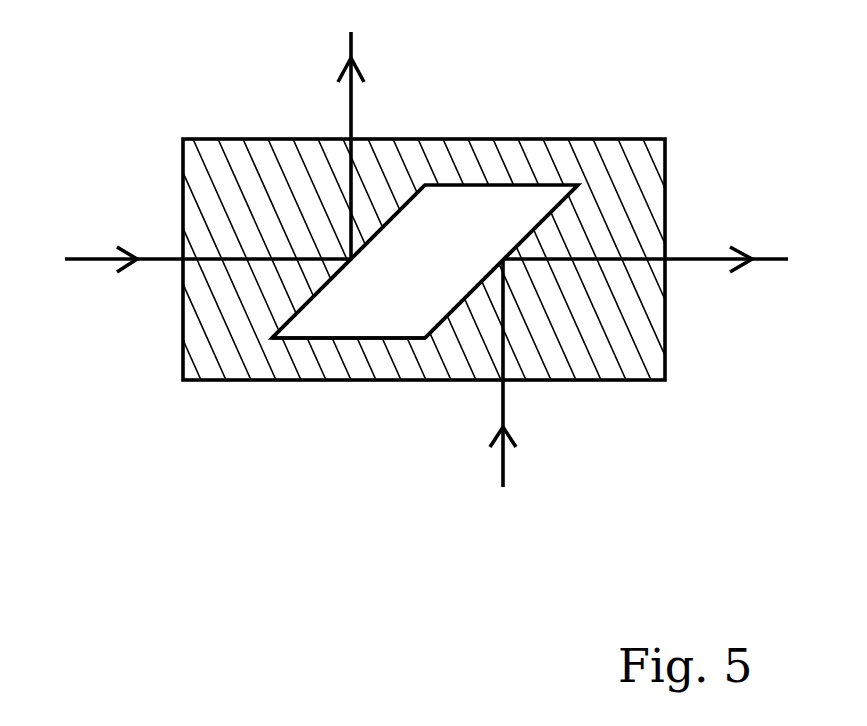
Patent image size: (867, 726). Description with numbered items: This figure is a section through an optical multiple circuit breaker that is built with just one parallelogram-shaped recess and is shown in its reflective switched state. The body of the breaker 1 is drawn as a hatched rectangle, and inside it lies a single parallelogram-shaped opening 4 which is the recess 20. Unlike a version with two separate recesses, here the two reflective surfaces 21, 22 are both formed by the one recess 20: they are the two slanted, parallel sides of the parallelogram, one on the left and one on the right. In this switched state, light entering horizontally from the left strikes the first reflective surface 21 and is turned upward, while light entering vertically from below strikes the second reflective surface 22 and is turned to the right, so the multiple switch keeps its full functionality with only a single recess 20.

The optical switching element body 1 is at (607, 138).
The mirror element 4 is at (470, 213).
The recess 20 is at (352, 340).
The reflective surface 21 is at (315, 292).
The reflective surface 22 is at (452, 305).